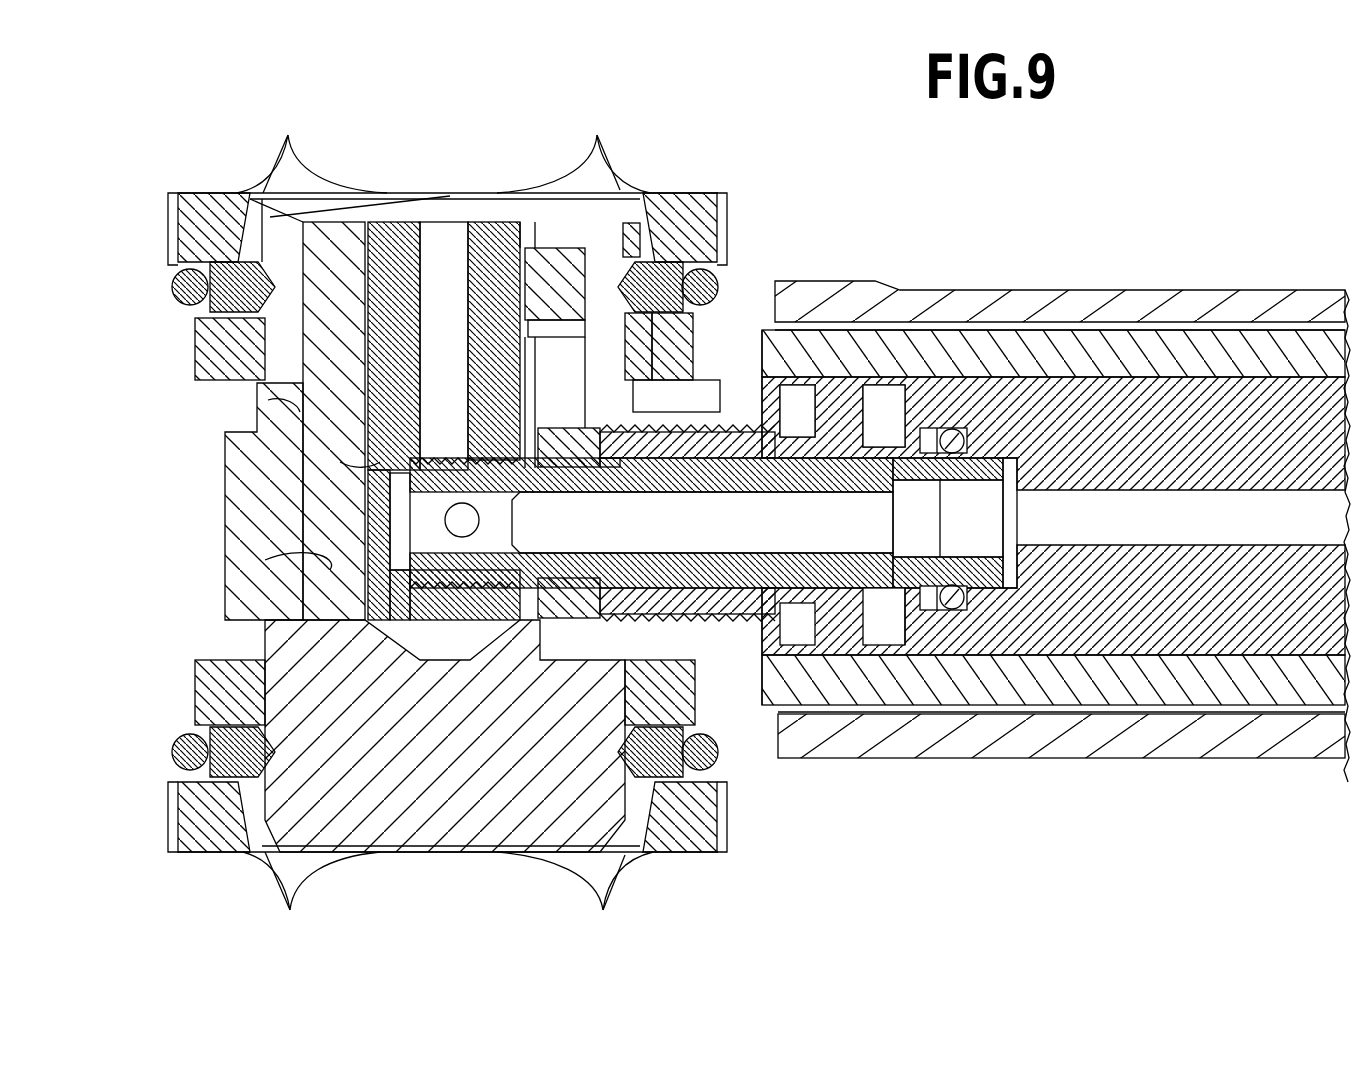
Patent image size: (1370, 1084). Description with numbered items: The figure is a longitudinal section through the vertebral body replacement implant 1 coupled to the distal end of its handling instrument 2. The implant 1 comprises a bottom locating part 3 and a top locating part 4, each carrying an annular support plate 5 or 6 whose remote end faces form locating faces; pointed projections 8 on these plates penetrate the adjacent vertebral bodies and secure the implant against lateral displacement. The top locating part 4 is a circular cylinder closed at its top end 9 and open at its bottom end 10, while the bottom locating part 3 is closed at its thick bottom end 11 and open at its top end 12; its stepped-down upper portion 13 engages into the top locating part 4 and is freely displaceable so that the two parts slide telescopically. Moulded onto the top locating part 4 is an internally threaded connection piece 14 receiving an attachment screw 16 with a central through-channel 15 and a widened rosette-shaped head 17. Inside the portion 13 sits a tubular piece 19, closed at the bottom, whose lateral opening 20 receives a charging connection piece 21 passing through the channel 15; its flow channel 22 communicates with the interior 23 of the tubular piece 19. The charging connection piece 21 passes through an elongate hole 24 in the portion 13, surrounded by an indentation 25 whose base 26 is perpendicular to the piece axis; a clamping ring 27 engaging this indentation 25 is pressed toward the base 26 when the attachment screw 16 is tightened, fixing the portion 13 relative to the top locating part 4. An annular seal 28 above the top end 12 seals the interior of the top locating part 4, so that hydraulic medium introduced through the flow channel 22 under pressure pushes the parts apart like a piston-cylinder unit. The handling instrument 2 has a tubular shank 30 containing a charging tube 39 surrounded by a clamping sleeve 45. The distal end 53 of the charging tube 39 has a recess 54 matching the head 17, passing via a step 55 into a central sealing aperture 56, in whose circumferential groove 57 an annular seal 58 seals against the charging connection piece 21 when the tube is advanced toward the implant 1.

The implant 1 is at (243, 160).
The handling instrument 2 is at (1056, 483).
The bottom locating part 3 is at (418, 856).
The top locating part 4 is at (600, 240).
The annular support plate 5 is at (200, 853).
The annular support plate 6 is at (200, 205).
The pointed projections 8 is at (605, 215).
The top end 9 is at (400, 200).
The bottom end 10 is at (330, 562).
The bottom end 11 is at (508, 854).
The top end 12 is at (302, 412).
The upper portion 13 is at (305, 507).
The internally threaded connection piece 14 is at (662, 425).
The through-channel 15 is at (772, 428).
The attachment screw 16 is at (778, 425).
The head 17 is at (845, 440).
The tubular piece 19 is at (488, 245).
The lateral opening 20 is at (530, 640).
The charging connection piece 21 is at (710, 600).
The flow channel 22 is at (706, 523).
The interior 23 is at (378, 462).
The elongate hole 24 is at (520, 352).
The indentation 25 is at (690, 320).
The base 26 is at (545, 300).
The clamping ring 27 is at (560, 605).
The annular seal 28 is at (330, 260).
The shank 30 is at (1092, 295).
The charging tube 39 is at (1225, 615).
The clamping sleeve 45 is at (1155, 685).
The distal end 53 is at (905, 625).
The recess 54 is at (880, 410).
The step 55 is at (890, 742).
The sealing aperture 56 is at (985, 612).
The circumferential groove 57 is at (880, 642).
The annular seal 58 is at (952, 612).